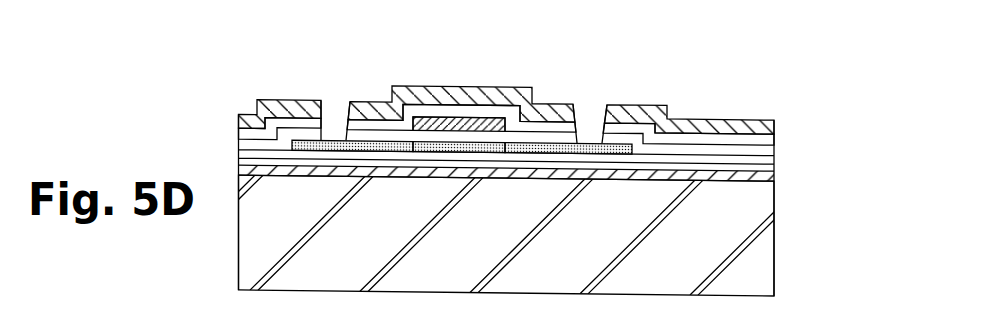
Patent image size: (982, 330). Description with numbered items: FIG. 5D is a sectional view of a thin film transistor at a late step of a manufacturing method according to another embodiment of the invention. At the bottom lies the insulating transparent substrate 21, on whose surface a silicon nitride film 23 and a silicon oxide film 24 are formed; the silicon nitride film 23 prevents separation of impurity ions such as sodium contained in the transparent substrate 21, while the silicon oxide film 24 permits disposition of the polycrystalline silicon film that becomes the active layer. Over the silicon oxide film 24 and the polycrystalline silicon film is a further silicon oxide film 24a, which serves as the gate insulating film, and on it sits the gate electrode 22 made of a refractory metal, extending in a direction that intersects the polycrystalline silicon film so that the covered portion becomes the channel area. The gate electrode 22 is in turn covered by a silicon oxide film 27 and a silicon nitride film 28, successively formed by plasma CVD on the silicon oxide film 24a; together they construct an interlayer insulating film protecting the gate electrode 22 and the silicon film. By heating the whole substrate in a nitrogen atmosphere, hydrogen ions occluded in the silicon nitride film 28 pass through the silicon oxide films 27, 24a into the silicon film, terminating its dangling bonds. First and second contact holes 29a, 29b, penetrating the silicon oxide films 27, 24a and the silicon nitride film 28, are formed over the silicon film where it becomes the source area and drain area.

The insulating transparent substrate 21 is at (765, 277).
The gate electrode 22 is at (441, 117).
The silicon nitride film 23 is at (777, 182).
The silicon oxide film 24 is at (775, 163).
The silicon oxide film (gate insulating film) 24a is at (775, 148).
The silicon oxide film 27 is at (775, 140).
The silicon nitride film 28 is at (775, 125).
The first contact hole 29a is at (322, 113).
The second contact hole 29b is at (573, 115).